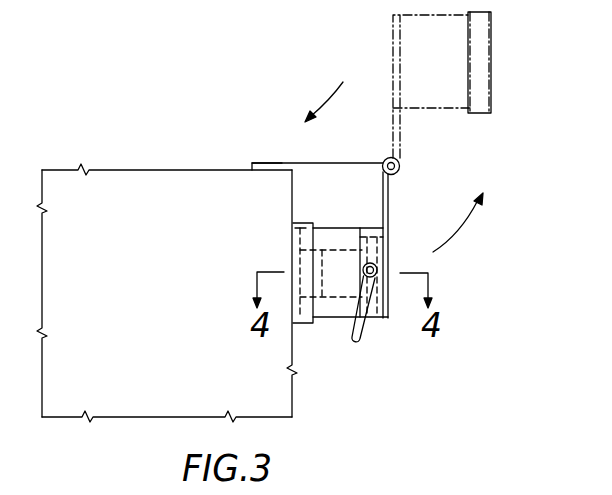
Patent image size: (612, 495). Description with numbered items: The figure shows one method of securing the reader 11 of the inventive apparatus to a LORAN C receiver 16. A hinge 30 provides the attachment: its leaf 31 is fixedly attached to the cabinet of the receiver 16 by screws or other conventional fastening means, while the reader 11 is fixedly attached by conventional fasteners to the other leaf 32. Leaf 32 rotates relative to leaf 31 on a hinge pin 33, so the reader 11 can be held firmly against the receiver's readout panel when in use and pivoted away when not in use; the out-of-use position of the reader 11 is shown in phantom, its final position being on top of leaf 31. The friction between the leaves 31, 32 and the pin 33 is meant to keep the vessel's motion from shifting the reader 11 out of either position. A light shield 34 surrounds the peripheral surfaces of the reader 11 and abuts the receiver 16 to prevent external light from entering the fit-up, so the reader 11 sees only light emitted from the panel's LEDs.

The LORAN C receiver 16 is at (167, 315).
The hinge 30 is at (337, 162).
The leaf 31 is at (265, 161).
The leaf 32 is at (388, 222).
The hinge pin 33 is at (400, 168).
The light shield 34 is at (307, 325).
The reader 11 is at (340, 322).